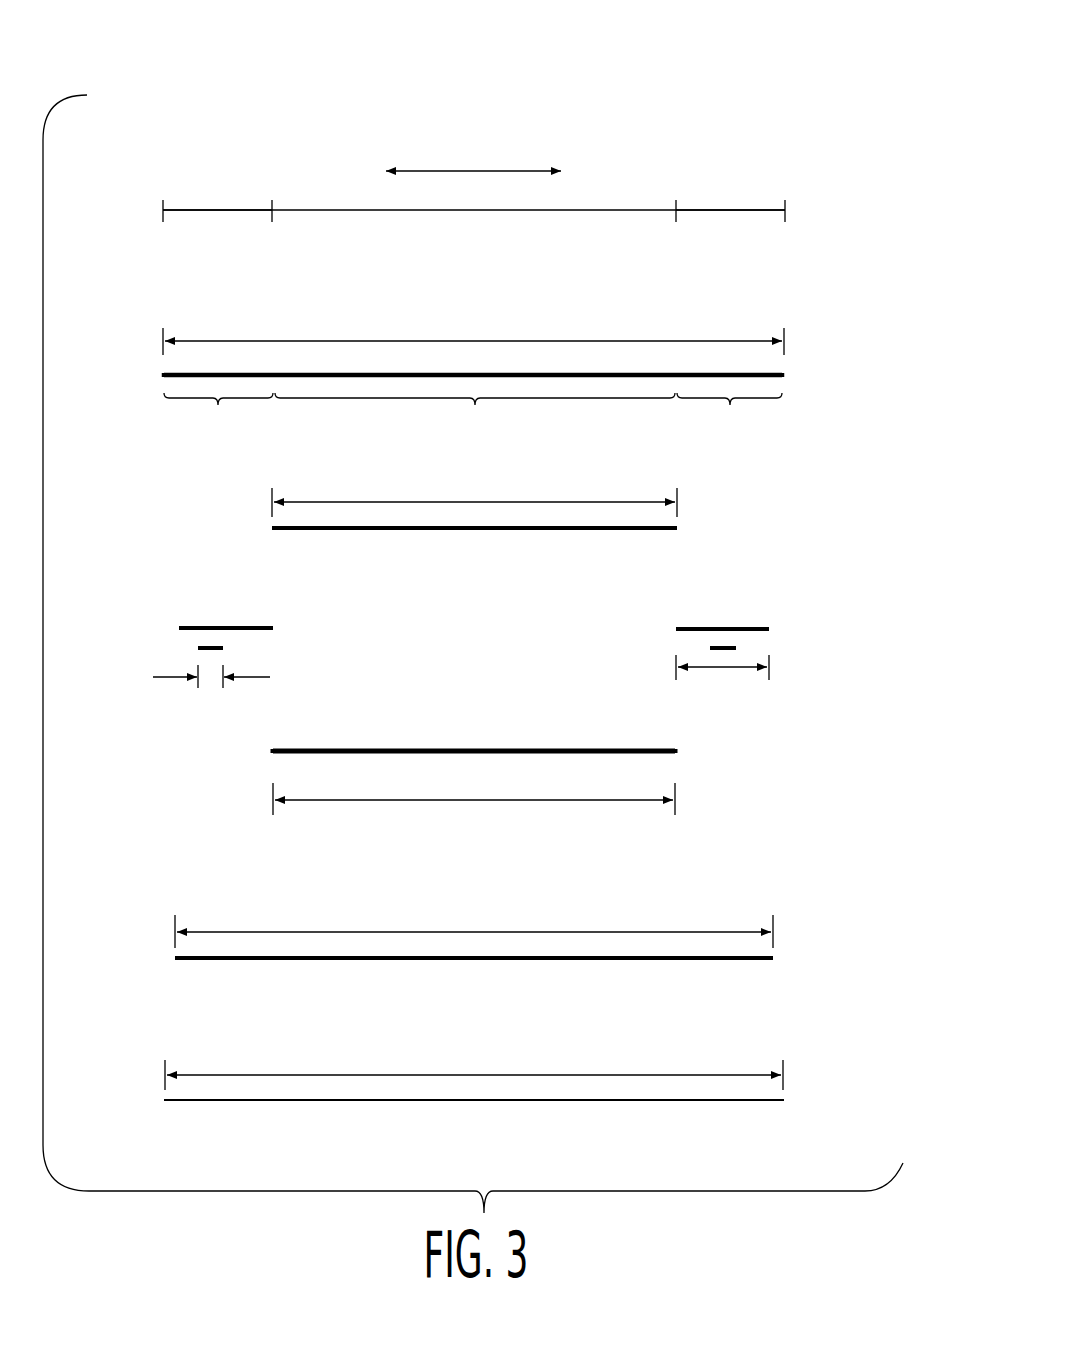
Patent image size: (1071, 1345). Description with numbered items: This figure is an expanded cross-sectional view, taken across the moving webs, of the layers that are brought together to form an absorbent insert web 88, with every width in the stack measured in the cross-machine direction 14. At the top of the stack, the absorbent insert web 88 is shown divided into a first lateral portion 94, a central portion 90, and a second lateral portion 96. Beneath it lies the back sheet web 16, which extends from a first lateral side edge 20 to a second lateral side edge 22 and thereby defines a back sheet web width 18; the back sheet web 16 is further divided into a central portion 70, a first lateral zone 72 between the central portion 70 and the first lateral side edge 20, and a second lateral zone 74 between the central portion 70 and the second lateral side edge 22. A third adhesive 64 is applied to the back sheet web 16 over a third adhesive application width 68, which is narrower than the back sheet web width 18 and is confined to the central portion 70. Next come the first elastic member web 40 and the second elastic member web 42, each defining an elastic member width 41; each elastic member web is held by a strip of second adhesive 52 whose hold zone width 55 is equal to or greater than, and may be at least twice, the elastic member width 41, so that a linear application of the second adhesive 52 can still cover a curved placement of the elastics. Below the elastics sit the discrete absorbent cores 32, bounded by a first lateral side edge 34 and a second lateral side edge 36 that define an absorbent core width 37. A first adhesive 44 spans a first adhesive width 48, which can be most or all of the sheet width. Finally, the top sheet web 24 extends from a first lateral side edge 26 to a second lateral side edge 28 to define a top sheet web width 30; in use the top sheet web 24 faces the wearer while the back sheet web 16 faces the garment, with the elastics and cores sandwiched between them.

The absorbent insert web 88 is at (800, 92).
The central portion 90 is at (618, 210).
The second lateral portion 96 is at (213, 210).
The first lateral portion 94 is at (726, 210).
The cross-machine direction 14 is at (470, 171).
The back sheet web width 18 is at (475, 341).
The back sheet web 16 is at (777, 378).
The second lateral side edge 22 is at (164, 375).
The first lateral side edge 20 is at (782, 372).
The second lateral zone 74 is at (218, 421).
The central portion 70 is at (475, 421).
The first lateral zone 72 is at (729, 421).
The third adhesive application width 68 is at (586, 502).
The third adhesive 64 is at (526, 531).
The second adhesive 52 is at (198, 627).
The second elastic member web 42 is at (200, 646).
The elastic member width 41 is at (177, 677).
The first elastic member web 40 is at (739, 645).
The hold zone width 55 is at (740, 668).
The first lateral side edge 34 is at (676, 751).
The second lateral side edge 36 is at (268, 753).
The absorbent cores 32 is at (655, 754).
The absorbent core width 37 is at (530, 800).
The first adhesive width 48 is at (620, 932).
The first adhesive 44 is at (690, 960).
The top sheet web width 30 is at (452, 1075).
The top sheet web 24 is at (655, 1102).
The second lateral side edge 28 is at (165, 1100).
The first lateral side edge 26 is at (783, 1100).